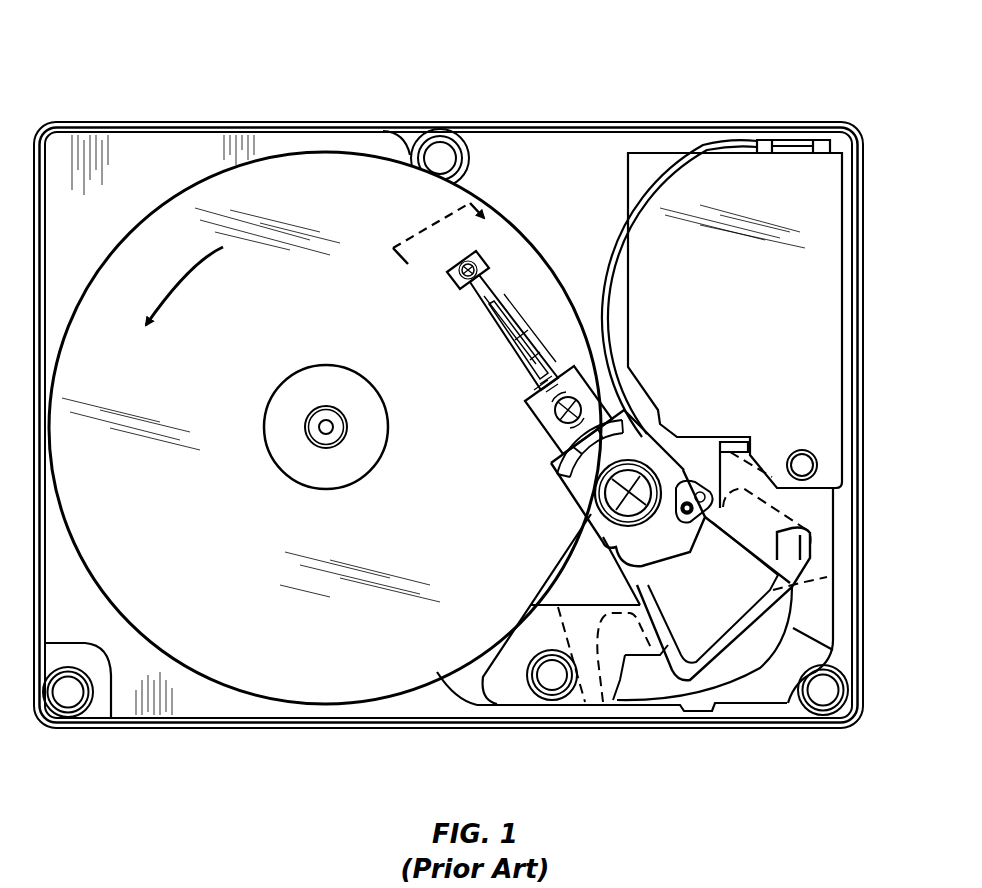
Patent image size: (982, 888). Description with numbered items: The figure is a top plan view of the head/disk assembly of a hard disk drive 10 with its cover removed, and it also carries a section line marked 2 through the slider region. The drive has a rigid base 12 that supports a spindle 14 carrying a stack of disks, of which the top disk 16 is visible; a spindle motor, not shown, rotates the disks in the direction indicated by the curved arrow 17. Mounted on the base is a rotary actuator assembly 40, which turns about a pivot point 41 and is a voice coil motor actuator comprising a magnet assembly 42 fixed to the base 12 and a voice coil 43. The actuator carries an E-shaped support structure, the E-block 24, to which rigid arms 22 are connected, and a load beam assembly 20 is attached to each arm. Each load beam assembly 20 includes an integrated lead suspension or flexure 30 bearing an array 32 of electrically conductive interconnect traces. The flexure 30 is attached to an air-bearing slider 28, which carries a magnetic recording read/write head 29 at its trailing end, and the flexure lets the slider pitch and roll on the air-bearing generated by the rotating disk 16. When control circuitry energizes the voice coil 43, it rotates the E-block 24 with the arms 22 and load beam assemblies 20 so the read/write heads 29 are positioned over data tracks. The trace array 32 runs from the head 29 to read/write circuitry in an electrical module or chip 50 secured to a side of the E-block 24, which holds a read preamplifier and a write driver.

The hard disk drive 10 is at (475, 392).
The rigid base 12 is at (202, 728).
The spindle 14 is at (327, 366).
The top disk 16 is at (318, 684).
The curved arrow 17 is at (183, 276).
The load beam assembly 20 is at (664, 454).
The rigid arm 22 is at (545, 428).
The E-block 24 is at (608, 488).
The air-bearing slider 28 is at (490, 262).
The read/write head 29 is at (468, 260).
The flexure 30 is at (487, 275).
The array of interconnect traces 32 is at (507, 317).
The rotary actuator assembly 40 is at (572, 562).
The pivot point 41 is at (590, 517).
The magnet assembly 42 is at (738, 488).
The voice coil 43 is at (793, 585).
The electrical module or chip 50 is at (677, 437).
The section line 2- 2 is at (446, 251).